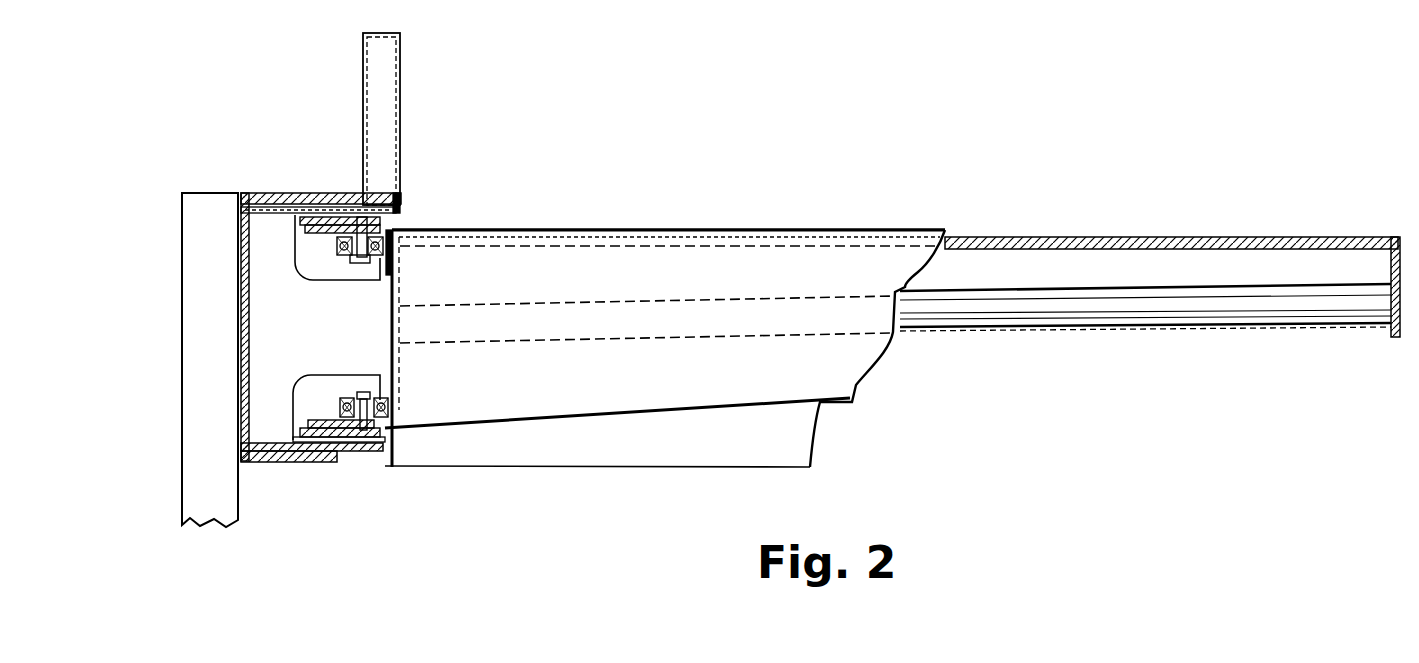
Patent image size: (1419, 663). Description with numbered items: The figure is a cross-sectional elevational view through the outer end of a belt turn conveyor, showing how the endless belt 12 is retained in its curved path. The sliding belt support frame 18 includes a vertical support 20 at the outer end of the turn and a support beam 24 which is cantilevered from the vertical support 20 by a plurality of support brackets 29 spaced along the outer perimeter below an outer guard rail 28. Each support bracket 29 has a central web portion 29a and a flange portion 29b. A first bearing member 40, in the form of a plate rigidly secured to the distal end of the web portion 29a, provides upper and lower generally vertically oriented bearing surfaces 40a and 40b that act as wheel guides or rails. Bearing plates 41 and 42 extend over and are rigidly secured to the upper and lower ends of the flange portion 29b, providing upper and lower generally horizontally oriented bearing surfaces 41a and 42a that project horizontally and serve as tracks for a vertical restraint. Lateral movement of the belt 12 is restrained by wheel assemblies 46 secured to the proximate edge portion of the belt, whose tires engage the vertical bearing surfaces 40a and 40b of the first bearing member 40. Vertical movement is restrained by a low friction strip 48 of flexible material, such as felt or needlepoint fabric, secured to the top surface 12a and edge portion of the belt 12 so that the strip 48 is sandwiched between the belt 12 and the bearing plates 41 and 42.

The endless belt 12 is at (889, 225).
The top surface 12a is at (688, 228).
The sliding belt support frame 18 is at (215, 186).
The vertical support 20 is at (198, 268).
The support beam 24 is at (1068, 233).
The outer guard rail 28 is at (401, 100).
The support bracket 29 is at (366, 323).
The central web portion 29a is at (400, 231).
The flange portion 29b is at (281, 423).
The first bearing member 40 is at (400, 320).
The upper vertical bearing surface 40a is at (400, 292).
The lower vertical bearing surface 40b is at (382, 375).
The bearing plate 41 is at (400, 205).
The upper horizontal bearing surface 41a is at (322, 207).
The bearing plate 42 is at (384, 446).
The lower horizontal bearing surface 42a is at (388, 430).
The wheel assembly 46 is at (324, 253).
The low friction strip 48 is at (292, 205).